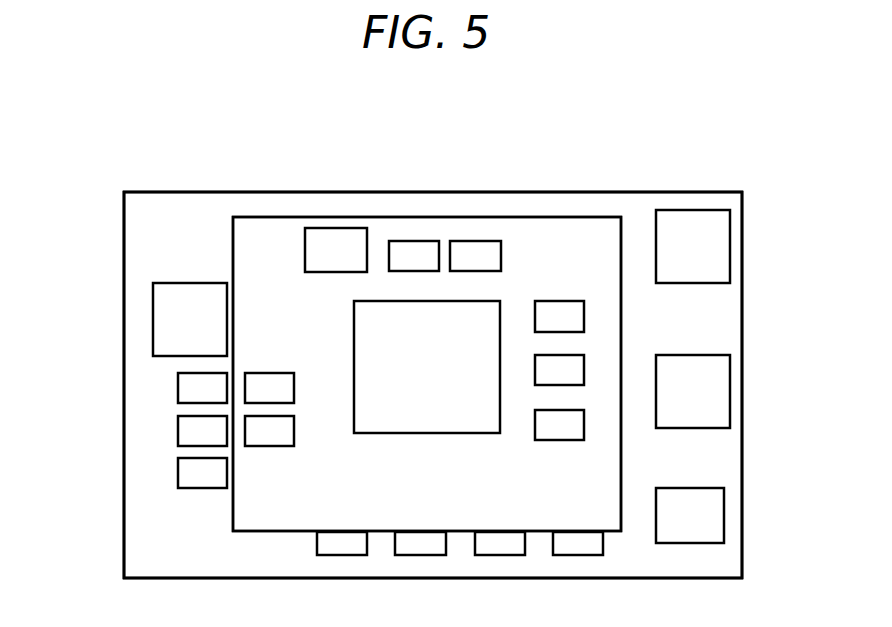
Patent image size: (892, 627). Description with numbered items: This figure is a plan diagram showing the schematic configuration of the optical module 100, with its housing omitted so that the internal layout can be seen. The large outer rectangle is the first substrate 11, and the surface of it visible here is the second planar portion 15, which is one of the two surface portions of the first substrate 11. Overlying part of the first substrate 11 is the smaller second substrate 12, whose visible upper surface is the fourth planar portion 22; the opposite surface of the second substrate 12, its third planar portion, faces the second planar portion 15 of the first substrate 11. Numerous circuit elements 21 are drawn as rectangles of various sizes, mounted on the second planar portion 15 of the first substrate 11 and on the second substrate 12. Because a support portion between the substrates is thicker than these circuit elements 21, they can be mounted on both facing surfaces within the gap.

The optical module 100 is at (733, 154).
The first substrate 11 is at (128, 239).
The second planar portion 15 is at (167, 222).
The second substrate 12 is at (282, 222).
The fourth planar portion 22 is at (262, 247).
The circuit elements 21 is at (380, 308).